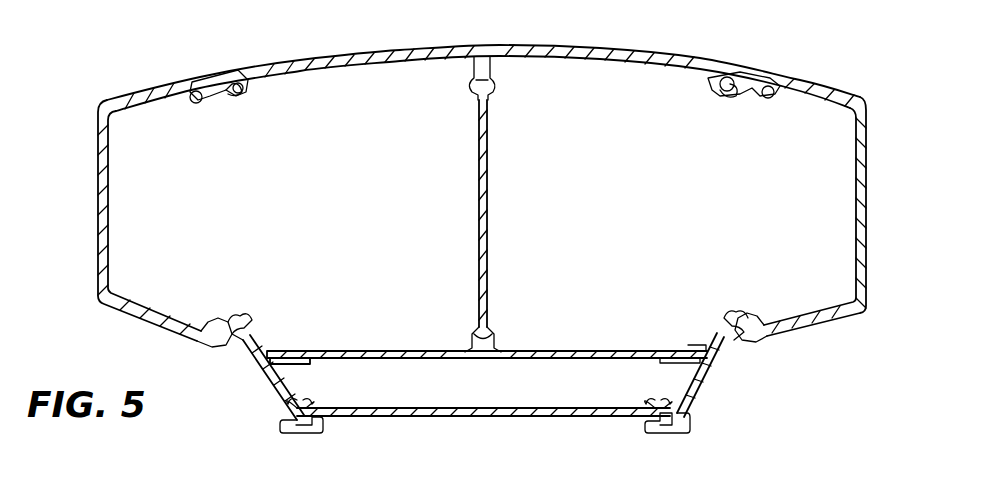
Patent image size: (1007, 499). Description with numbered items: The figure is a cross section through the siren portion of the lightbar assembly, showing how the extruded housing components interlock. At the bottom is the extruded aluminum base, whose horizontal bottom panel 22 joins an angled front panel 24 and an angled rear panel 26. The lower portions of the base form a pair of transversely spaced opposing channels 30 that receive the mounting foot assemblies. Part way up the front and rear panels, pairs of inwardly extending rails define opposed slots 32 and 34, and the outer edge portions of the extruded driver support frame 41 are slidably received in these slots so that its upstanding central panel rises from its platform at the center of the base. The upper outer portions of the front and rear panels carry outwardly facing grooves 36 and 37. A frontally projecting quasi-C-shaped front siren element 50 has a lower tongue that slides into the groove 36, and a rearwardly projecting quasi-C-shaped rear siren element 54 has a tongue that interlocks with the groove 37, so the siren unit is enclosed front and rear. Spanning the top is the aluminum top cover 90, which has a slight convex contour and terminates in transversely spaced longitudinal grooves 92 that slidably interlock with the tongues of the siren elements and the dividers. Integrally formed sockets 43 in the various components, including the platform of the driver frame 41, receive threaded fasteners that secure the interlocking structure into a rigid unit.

The bottom panel 22 is at (533, 410).
The front panel 24 is at (693, 383).
The rear panel 26 is at (275, 387).
The channels 30 is at (323, 422).
The slot 32 is at (685, 350).
The slot 34 is at (267, 355).
The groove 36 is at (203, 323).
The groove 37 is at (755, 317).
The driver support frame 41 is at (490, 208).
The sockets 43 is at (228, 95).
The front siren element 50 is at (863, 195).
The rear siren element 54 is at (100, 182).
The top cover 90 is at (527, 43).
The grooves 92 is at (195, 90).